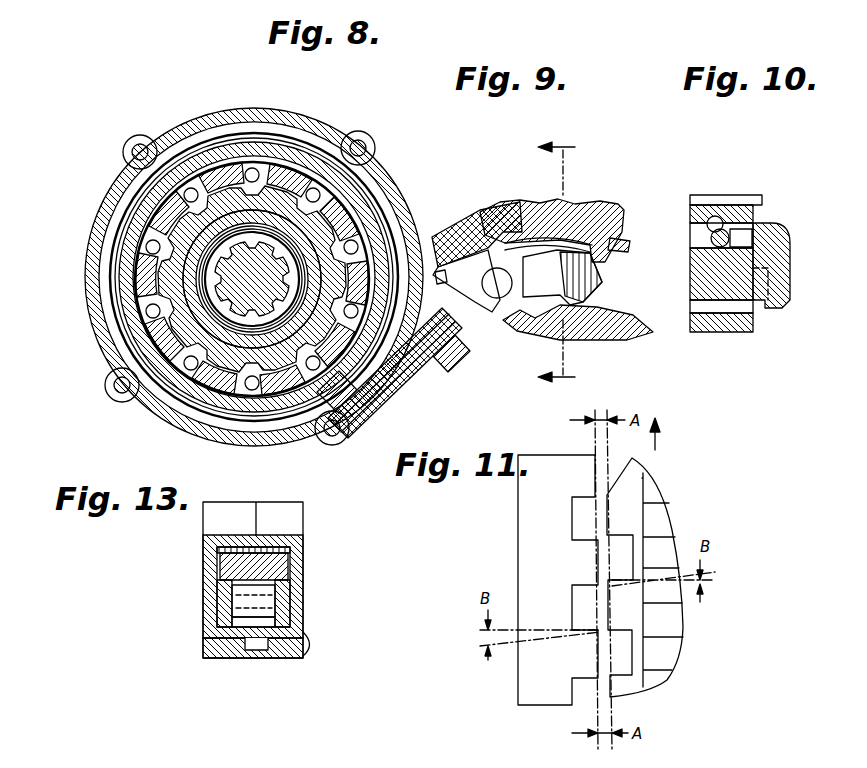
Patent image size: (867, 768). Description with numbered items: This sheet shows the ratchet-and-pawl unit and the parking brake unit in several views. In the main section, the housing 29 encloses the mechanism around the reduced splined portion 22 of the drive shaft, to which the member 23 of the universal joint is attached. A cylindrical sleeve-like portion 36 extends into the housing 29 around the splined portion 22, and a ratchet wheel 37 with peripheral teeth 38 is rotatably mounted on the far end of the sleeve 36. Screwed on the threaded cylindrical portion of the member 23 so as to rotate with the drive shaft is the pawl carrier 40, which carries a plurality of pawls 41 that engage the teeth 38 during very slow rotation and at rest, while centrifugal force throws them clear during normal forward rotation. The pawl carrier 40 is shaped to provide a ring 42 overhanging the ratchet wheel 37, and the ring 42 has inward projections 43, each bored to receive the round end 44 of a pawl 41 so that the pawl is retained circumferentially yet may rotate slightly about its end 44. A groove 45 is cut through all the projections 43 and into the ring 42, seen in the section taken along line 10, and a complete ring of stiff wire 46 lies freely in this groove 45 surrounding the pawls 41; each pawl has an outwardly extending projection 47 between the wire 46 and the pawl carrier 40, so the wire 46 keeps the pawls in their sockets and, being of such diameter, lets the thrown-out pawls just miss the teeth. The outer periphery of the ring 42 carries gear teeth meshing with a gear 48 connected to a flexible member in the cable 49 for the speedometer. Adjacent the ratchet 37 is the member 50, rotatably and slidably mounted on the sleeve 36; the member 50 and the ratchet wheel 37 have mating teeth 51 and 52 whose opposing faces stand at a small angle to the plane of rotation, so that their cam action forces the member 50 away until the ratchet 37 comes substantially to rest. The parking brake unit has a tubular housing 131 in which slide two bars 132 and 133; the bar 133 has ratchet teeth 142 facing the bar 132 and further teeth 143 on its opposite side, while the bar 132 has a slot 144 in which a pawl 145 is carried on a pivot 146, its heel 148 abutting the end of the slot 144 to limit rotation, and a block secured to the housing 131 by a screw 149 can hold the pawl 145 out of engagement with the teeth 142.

In FIG. 9, the section line 10— 10 is at (567, 262).
In FIG. 8, the reduced splined portion 22 is at (300, 252).
In FIG. 8, the member of the universal joint 23 is at (372, 202).
In FIG. 8, the housing 29 is at (90, 212).
In FIG. 8, the cylindrical sleeve-like portion 36 is at (372, 175).
In FIG. 8, the ratchet wheel 37 is at (180, 338).
In FIG. 9, the ratchet wheel 37 is at (638, 340).
In FIG. 10, the ratchet wheel 37 is at (748, 330).
In FIG. 11, the ratchet wheel 37 is at (658, 490).
In FIG. 8, the peripheral teeth 38 is at (178, 320).
In FIG. 9, the peripheral teeth 38 is at (612, 312).
In FIG. 10, the pawl carrier 40 is at (790, 262).
In FIG. 8, the pawl 41 is at (240, 168).
In FIG. 9, the pawl 41 is at (545, 290).
In FIG. 10, the pawl 41 is at (698, 285).
In FIG. 8, the ring 42 is at (300, 152).
In FIG. 9, the ring 42 is at (615, 215).
In FIG. 10, the ring 42 is at (702, 215).
In FIG. 8, the projections 43 is at (256, 185).
In FIG. 9, the projections 43 is at (470, 285).
In FIG. 8, the round end 44 is at (262, 168).
In FIG. 9, the round end 44 is at (492, 300).
In FIG. 10, the groove 45 is at (740, 204).
In FIG. 8, the ring of stiff wire 46 is at (318, 163).
In FIG. 9, the ring of stiff wire 46 is at (628, 242).
In FIG. 10, the ring of stiff wire 46 is at (711, 238).
In FIG. 9, the outwardly extending projection 47 is at (528, 243).
In FIG. 10, the outwardly extending projection 47 is at (744, 238).
In FIG. 8, the gear 48 is at (342, 442).
In FIG. 8, the cable 49 is at (462, 352).
In FIG. 11, the member 50 is at (518, 551).
In FIG. 11, the teeth 51 is at (585, 548).
In FIG. 11, the teeth 52 is at (618, 498).
In FIG. 13, the tubular housing 131 is at (303, 560).
In FIG. 13, the bar 132 is at (222, 614).
In FIG. 13, the bar 133 is at (222, 570).
In FIG. 13, the ratchet teeth 142 is at (222, 590).
In FIG. 13, the ratchet teeth 143 is at (210, 555).
In FIG. 13, the slot 144 is at (205, 644).
In FIG. 13, the pawl 145 is at (282, 588).
In FIG. 13, the pivot 146 is at (286, 596).
In FIG. 13, the heel 148 is at (282, 625).
In FIG. 13, the screw 149 is at (270, 658).